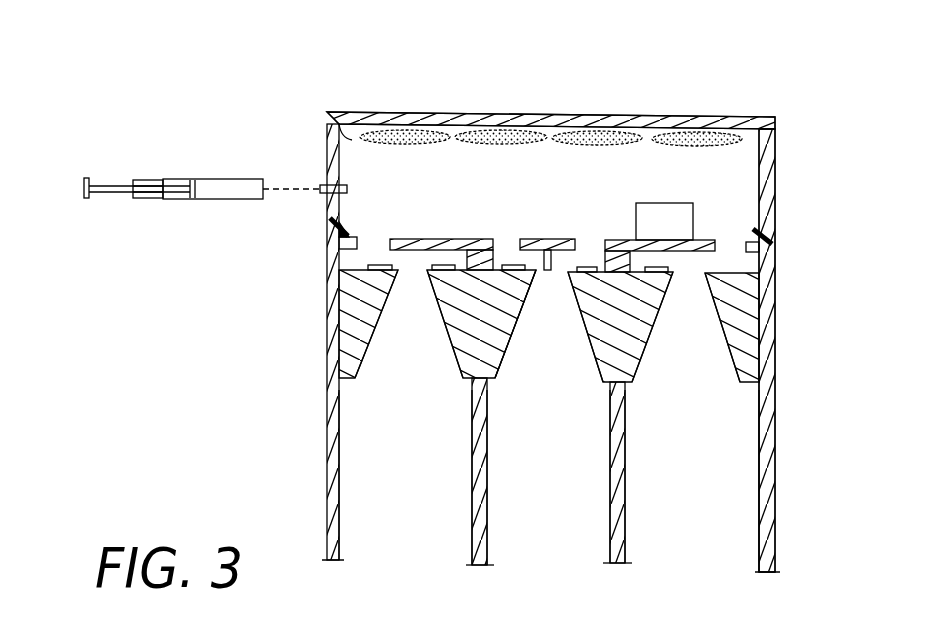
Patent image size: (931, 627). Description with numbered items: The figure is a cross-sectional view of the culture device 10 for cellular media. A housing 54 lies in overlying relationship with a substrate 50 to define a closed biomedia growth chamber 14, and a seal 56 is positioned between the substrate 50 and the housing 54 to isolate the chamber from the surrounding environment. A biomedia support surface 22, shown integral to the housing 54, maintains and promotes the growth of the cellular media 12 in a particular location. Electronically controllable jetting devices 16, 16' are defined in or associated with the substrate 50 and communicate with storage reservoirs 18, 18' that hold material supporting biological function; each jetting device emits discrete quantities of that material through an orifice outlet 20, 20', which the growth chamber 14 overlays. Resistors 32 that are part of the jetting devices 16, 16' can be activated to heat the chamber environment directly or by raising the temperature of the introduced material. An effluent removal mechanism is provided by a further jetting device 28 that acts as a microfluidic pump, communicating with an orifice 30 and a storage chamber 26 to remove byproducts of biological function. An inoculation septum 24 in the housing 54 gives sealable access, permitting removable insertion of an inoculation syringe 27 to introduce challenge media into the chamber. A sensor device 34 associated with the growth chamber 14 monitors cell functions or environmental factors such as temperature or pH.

The culture device 10 is at (503, 82).
The cellular media 12 is at (517, 139).
The biomedia growth chamber 14 is at (740, 163).
The electronically controllable jetting device 16 is at (476, 417).
The electronically controllable jetting device 16' is at (527, 352).
The storage reservoir 18 is at (405, 477).
The storage reservoir 18' is at (548, 477).
The orifice outlet 20 is at (409, 324).
The orifice outlet 20' is at (549, 326).
The biomedia support surface 22 is at (350, 132).
The inoculation septum 24 is at (327, 150).
The storage chamber 26 is at (702, 538).
The inoculation syringe 27 is at (178, 178).
The jetting device 28 is at (668, 330).
The orifice 30 is at (688, 284).
The resistors 32 is at (498, 264).
The sensor device 34 is at (680, 233).
The substrate 50 is at (780, 325).
The housing 54 is at (779, 171).
The seal 56 is at (339, 228).